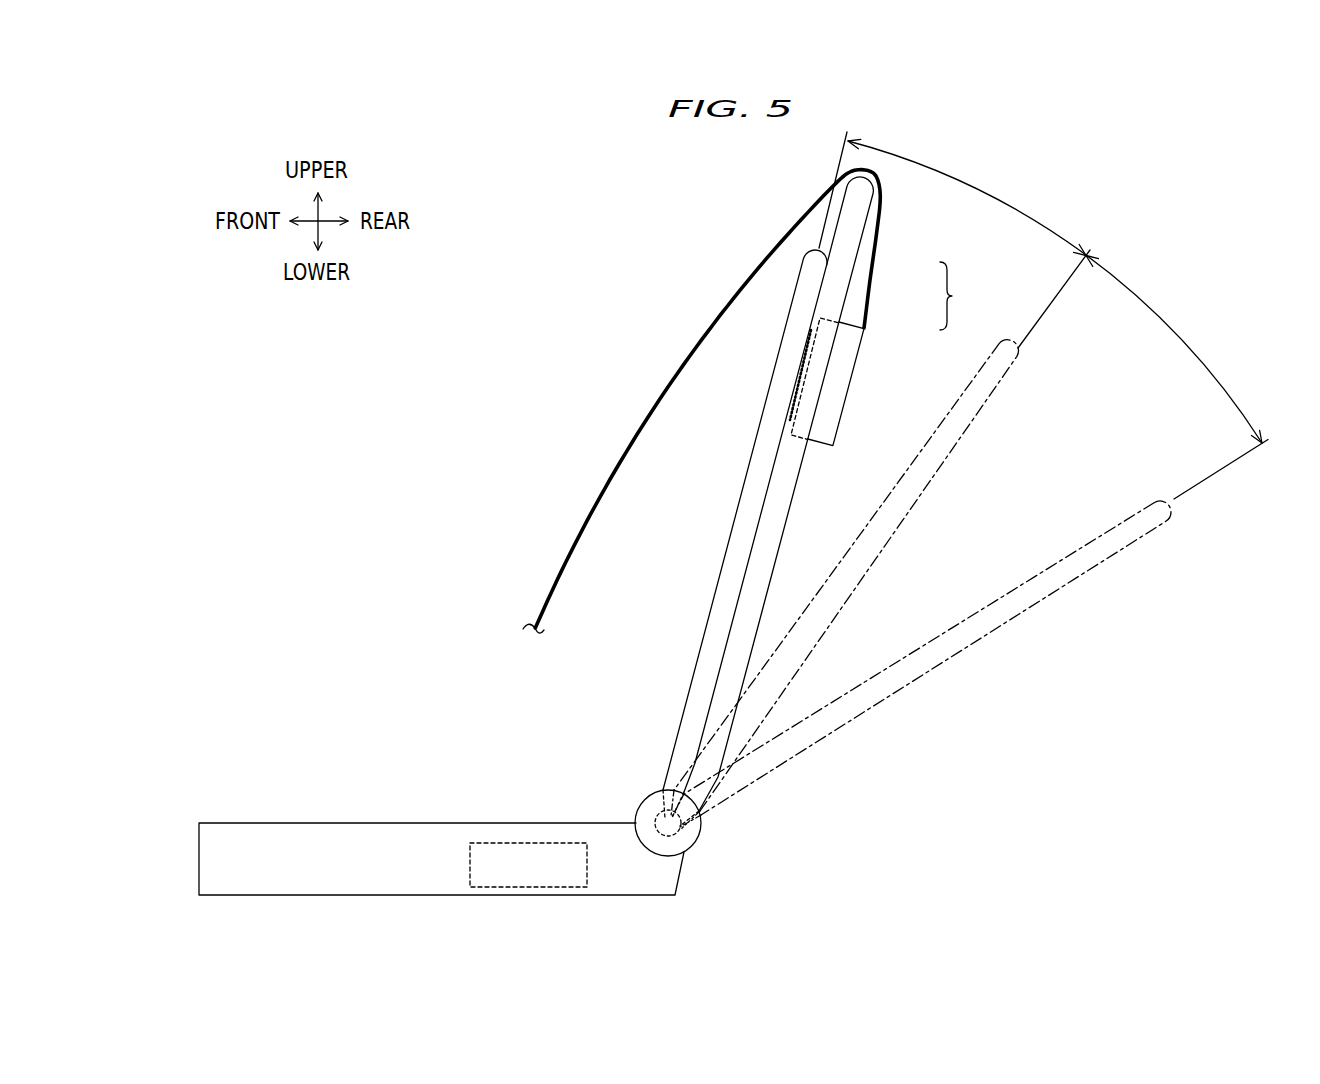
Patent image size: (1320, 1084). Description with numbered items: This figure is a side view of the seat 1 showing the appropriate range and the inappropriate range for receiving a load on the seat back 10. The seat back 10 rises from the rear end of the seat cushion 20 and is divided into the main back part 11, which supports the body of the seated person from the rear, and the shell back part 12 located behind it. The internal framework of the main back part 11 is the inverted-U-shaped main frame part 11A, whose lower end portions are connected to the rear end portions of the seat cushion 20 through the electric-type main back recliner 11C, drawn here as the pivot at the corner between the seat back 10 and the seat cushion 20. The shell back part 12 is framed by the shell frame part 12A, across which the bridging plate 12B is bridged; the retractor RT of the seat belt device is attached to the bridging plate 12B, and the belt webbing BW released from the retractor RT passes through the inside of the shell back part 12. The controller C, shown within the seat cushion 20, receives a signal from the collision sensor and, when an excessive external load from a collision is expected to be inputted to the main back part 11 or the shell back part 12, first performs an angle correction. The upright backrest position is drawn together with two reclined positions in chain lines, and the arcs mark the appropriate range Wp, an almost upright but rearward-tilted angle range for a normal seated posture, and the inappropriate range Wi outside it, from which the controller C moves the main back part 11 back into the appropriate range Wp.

The seat 1 is at (540, 278).
The seat back 10 is at (746, 367).
The main back part 11 is at (752, 460).
The main frame part 11A is at (740, 550).
The main back recliner 11C is at (686, 838).
The shell back part 12 is at (797, 492).
The shell frame part 12A is at (778, 517).
The bridging plate 12B is at (801, 375).
The seat cushion 20 is at (340, 811).
The controller C is at (532, 862).
The belt webbing BW is at (762, 272).
The retractor RT is at (853, 340).
The appropriate range Wp is at (1040, 287).
The inappropriate range Wi is at (1221, 408).